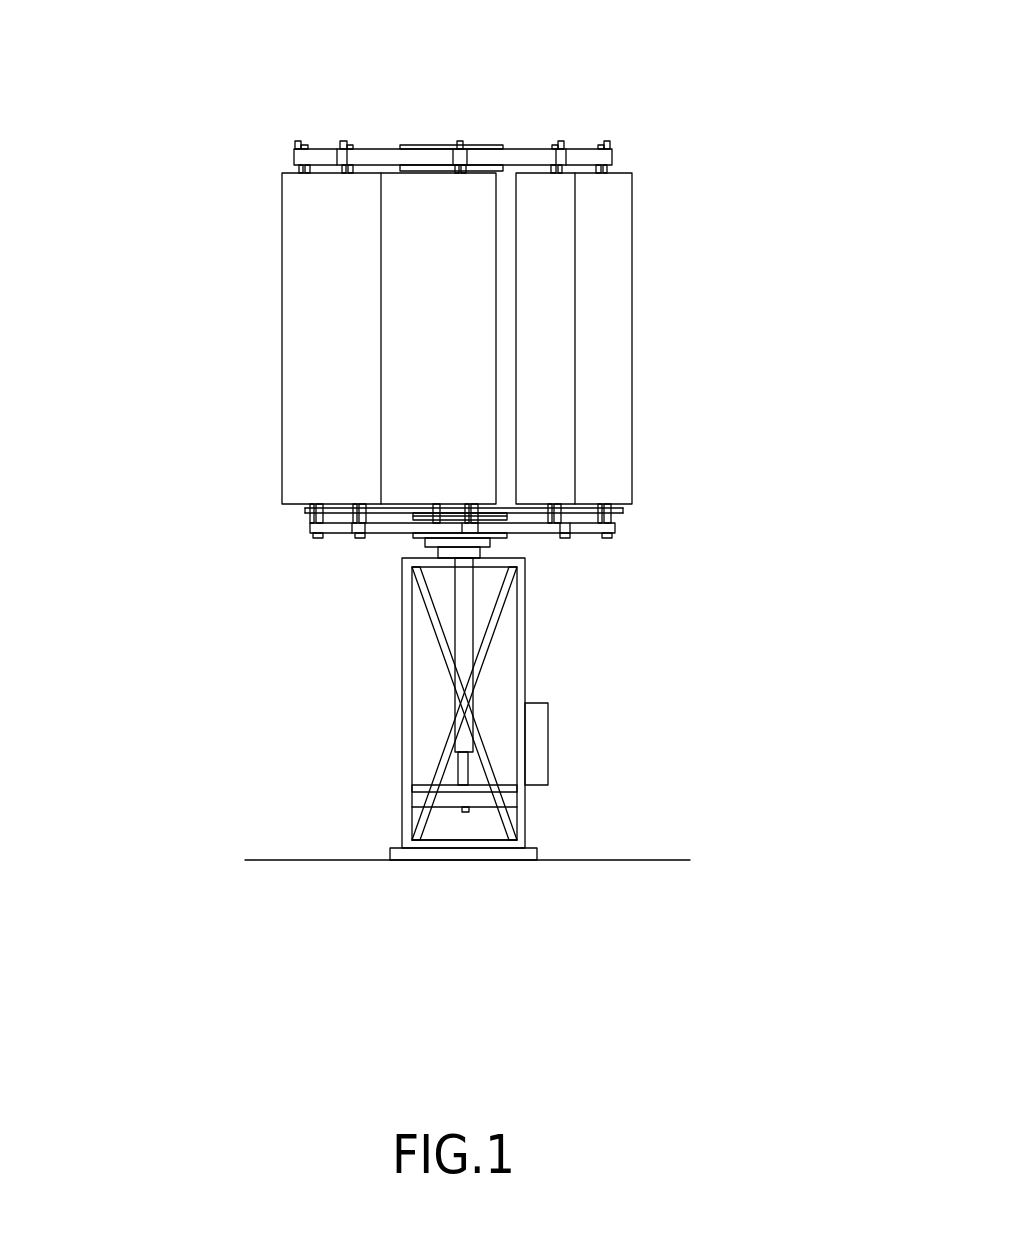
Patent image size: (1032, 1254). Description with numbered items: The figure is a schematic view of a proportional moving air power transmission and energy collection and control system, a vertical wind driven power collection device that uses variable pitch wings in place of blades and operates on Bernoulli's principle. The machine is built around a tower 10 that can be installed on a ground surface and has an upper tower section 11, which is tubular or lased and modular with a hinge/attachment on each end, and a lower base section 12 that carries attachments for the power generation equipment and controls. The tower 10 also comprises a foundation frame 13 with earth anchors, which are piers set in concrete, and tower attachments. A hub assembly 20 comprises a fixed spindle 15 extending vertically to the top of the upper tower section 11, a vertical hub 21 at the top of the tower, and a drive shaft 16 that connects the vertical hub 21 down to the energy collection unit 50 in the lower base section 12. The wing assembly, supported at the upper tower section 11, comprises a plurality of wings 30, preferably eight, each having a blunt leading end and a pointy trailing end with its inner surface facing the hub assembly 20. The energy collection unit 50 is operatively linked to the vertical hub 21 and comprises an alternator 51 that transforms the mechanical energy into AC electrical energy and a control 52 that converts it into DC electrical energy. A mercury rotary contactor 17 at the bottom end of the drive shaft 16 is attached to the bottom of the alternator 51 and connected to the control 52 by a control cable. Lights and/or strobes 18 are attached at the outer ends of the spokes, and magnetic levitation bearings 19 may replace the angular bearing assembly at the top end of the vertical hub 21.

The tower 10 is at (173, 285).
The upper tower section 11 is at (272, 173).
The lower base section 12 is at (342, 560).
The foundation frame 13 is at (537, 858).
The fixed spindle 15 is at (450, 548).
The drive shaft 16 is at (463, 617).
The mercury rotary contactor 17 is at (463, 808).
The lights and/or strobes 18 is at (608, 143).
The magnetic levitation bearings 19 is at (433, 147).
The hub assembly 20 is at (717, 545).
The vertical hub 21 is at (488, 539).
The wings 30 is at (555, 263).
The energy collection unit 50 is at (712, 652).
The alternator 51 is at (440, 802).
The control 52 is at (540, 750).